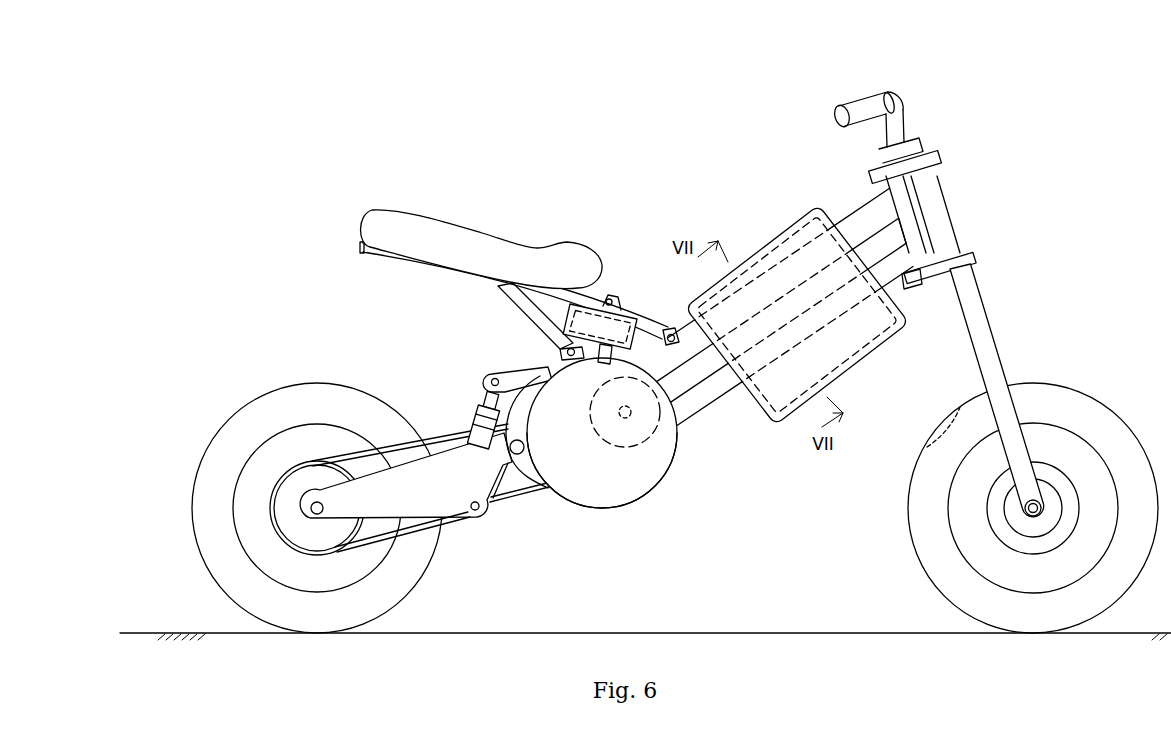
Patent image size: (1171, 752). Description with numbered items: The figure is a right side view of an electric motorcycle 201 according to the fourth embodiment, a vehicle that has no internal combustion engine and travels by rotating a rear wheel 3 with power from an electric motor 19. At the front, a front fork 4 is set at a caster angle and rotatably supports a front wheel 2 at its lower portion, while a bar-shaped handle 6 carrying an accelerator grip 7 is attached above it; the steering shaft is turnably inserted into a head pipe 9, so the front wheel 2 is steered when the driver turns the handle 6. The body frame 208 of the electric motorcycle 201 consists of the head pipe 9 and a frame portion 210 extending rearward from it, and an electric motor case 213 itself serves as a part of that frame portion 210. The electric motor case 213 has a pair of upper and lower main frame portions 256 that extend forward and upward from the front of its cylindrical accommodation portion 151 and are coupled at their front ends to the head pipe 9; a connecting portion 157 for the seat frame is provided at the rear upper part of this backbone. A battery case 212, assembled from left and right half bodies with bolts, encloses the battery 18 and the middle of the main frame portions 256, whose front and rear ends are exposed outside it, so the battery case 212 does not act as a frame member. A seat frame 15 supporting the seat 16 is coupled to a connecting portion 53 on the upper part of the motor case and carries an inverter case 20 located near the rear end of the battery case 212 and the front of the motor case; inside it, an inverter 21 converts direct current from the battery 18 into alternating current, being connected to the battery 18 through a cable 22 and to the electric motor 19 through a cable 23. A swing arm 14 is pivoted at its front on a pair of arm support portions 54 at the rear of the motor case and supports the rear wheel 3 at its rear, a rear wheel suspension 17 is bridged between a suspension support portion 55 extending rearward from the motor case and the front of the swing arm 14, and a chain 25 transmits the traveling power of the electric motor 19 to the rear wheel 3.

The electric motorcycle 201 is at (322, 124).
The front wheel 2 is at (1112, 410).
The rear wheel 3 is at (241, 405).
The front fork 4 is at (985, 350).
The handle 6 is at (905, 125).
The accelerator grip 7 is at (850, 106).
The head pipe 9 is at (920, 288).
The swing arm 14 is at (457, 522).
The seat frame 15 is at (358, 253).
The seat 16 is at (420, 220).
The rear wheel suspension 17 is at (473, 407).
The battery 18 is at (753, 250).
The electric motor 19 is at (625, 450).
The inverter case 20 is at (580, 303).
The inverter 21 is at (570, 337).
The cable 22 is at (668, 332).
The cable 23 is at (610, 298).
The chain 25 is at (352, 452).
The connecting portion 53 is at (540, 337).
The arm support portions 54 is at (509, 470).
The suspension support portion 55 is at (507, 368).
The accommodation portion 151 is at (622, 508).
The connecting portion 157 is at (690, 440).
The body frame 208 is at (927, 447).
The frame portion 210 is at (737, 418).
The battery case 212 is at (776, 225).
The electric motor case 213 is at (590, 490).
The main frame portions 256 is at (700, 420).